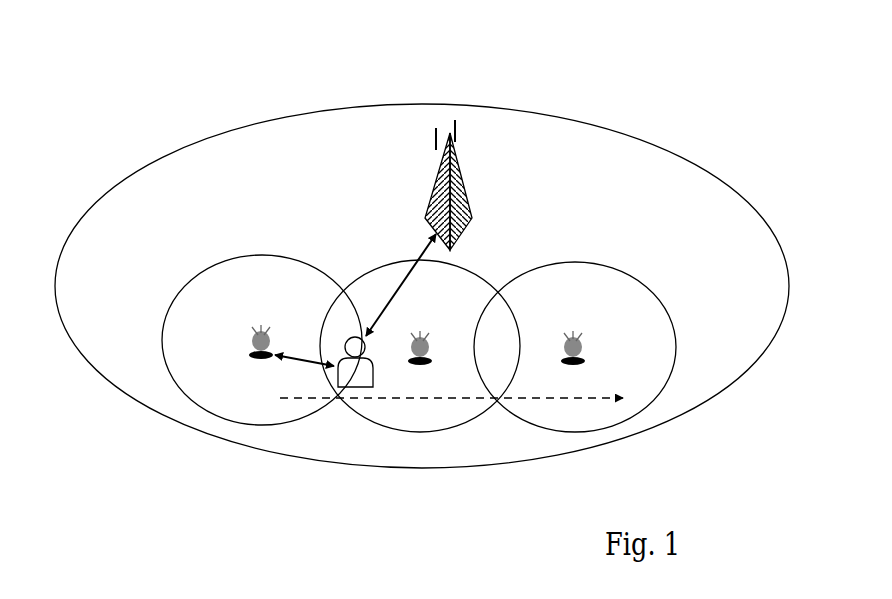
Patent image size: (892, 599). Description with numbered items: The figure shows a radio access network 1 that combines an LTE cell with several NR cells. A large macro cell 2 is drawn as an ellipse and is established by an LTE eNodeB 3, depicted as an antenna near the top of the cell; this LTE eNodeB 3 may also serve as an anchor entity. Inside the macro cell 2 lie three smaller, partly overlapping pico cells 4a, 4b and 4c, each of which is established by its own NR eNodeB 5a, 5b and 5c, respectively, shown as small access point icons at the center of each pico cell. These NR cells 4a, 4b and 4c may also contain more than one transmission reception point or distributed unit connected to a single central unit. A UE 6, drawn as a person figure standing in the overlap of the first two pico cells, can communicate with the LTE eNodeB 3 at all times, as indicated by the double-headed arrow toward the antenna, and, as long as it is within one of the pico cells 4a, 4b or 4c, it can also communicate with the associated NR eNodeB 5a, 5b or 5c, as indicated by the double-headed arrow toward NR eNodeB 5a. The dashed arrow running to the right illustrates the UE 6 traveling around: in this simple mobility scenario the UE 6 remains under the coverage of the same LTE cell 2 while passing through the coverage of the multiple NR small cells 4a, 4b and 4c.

The radio access network 1 is at (580, 50).
The macro cell 2 is at (412, 104).
The LTE eNodeB 3 is at (461, 190).
The pico cell 4a is at (257, 255).
The pico cell 4b is at (471, 261).
The pico cell 4c is at (596, 263).
The NR eNodeB 5a is at (255, 333).
The NR eNodeB 5b is at (428, 337).
The NR eNodeB 5c is at (581, 342).
The UE 6 is at (360, 380).